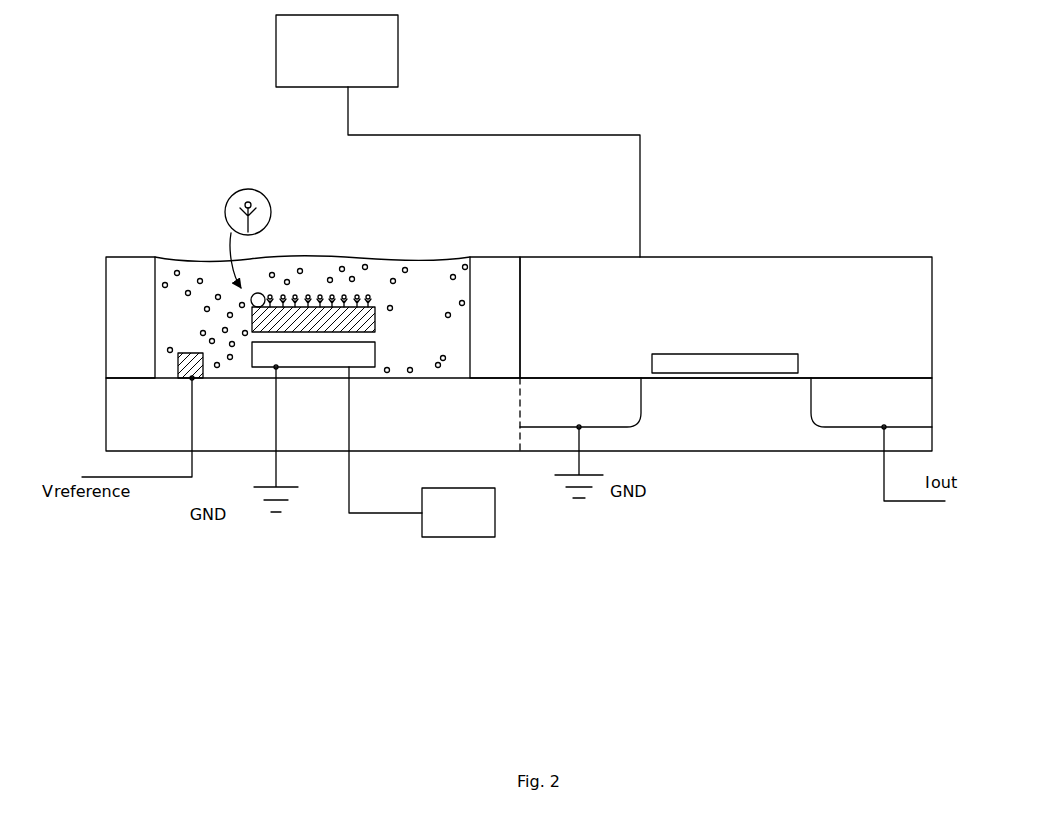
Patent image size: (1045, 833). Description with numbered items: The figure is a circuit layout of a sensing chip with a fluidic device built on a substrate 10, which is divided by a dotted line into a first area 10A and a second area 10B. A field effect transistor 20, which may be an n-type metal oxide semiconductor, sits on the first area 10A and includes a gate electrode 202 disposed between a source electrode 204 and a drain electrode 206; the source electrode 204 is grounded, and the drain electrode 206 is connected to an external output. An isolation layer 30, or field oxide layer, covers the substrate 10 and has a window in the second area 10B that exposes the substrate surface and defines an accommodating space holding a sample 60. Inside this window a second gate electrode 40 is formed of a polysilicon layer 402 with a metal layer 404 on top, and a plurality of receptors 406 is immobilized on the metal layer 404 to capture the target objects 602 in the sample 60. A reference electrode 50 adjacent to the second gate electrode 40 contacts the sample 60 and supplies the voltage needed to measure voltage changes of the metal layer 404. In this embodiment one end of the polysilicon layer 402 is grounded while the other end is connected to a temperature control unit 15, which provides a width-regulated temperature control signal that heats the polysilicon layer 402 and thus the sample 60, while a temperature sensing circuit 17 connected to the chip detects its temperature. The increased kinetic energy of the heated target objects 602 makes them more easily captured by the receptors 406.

The substrate 10 is at (907, 610).
The first area 10A is at (729, 413).
The second area 10B is at (311, 430).
The temperature control unit 15 is at (422, 452).
The temperature sensing circuit 17 is at (458, 136).
The field effect transistor 20 is at (788, 316).
The isolation layer 30 is at (130, 314).
The second gate electrode 40 is at (433, 317).
The reference electrode 50 is at (192, 353).
The sample 60 is at (165, 257).
The gate electrode 202 is at (713, 368).
The source electrode 204 is at (622, 398).
The drain electrode 206 is at (833, 392).
The polysilicon layer 402 is at (366, 351).
The metal layer 404 is at (376, 326).
The receptors 406 is at (249, 216).
The target objects 602 is at (250, 191).